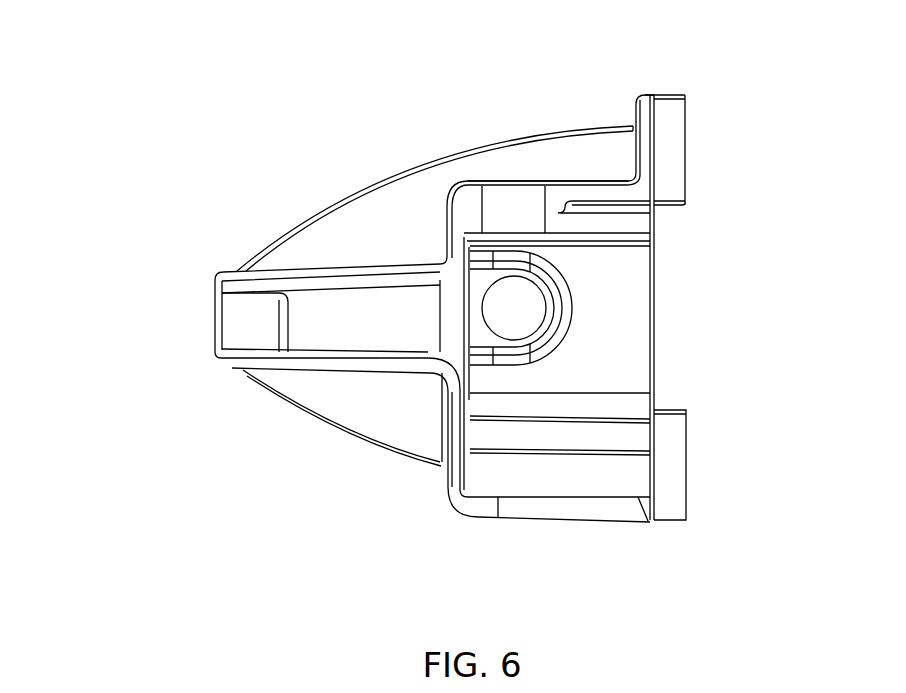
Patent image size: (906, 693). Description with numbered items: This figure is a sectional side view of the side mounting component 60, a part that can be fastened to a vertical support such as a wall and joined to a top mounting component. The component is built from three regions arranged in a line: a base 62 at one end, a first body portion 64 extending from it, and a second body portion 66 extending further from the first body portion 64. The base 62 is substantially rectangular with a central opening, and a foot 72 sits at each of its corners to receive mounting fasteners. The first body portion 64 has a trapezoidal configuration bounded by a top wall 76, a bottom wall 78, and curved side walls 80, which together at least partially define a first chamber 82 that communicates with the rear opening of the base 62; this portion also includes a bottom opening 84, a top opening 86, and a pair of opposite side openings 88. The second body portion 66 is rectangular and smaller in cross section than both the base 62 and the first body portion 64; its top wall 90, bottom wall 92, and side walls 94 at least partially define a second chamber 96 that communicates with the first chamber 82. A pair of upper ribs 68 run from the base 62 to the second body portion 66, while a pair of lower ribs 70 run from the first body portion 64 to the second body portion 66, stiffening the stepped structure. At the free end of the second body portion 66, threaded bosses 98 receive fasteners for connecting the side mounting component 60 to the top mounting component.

The side mounting component 60 is at (153, 443).
The base 62 is at (652, 117).
The first body portion 64 is at (630, 523).
The second body portion 66 is at (292, 370).
The upper ribs 68 is at (413, 167).
The lower ribs 70 is at (333, 412).
The foot 72 is at (685, 142).
The top wall 76 is at (597, 180).
The bottom wall 78 is at (472, 514).
The curved side walls 80 is at (633, 272).
The first chamber 82 is at (627, 362).
The bottom opening 84 is at (557, 522).
The top opening 86 is at (510, 198).
The side openings 88 is at (533, 312).
The top wall 90 is at (275, 277).
The bottom wall 92 is at (377, 370).
The side walls 94 is at (386, 300).
The second chamber 96 is at (400, 333).
The threaded bosses 98 is at (235, 312).